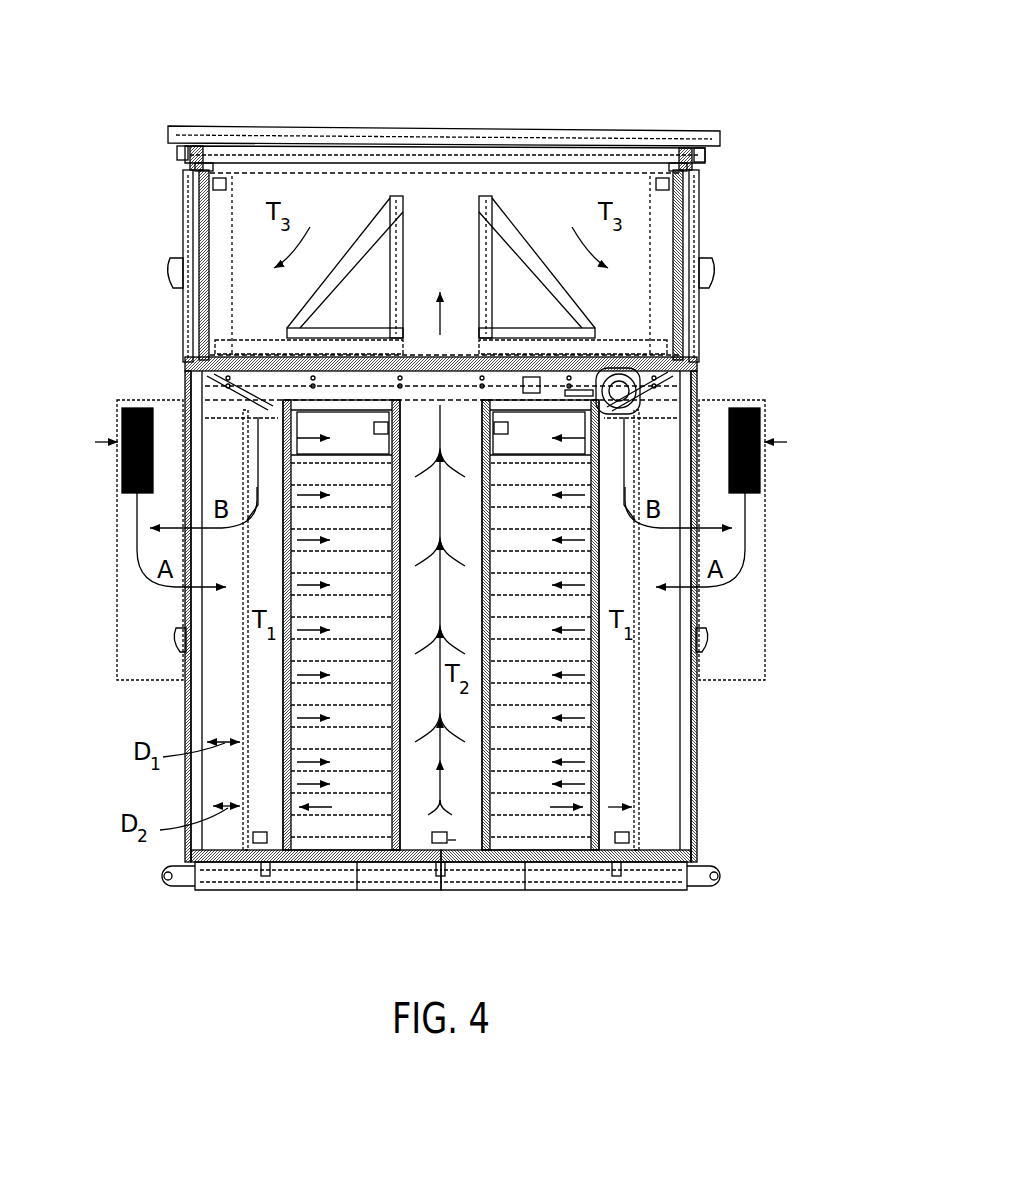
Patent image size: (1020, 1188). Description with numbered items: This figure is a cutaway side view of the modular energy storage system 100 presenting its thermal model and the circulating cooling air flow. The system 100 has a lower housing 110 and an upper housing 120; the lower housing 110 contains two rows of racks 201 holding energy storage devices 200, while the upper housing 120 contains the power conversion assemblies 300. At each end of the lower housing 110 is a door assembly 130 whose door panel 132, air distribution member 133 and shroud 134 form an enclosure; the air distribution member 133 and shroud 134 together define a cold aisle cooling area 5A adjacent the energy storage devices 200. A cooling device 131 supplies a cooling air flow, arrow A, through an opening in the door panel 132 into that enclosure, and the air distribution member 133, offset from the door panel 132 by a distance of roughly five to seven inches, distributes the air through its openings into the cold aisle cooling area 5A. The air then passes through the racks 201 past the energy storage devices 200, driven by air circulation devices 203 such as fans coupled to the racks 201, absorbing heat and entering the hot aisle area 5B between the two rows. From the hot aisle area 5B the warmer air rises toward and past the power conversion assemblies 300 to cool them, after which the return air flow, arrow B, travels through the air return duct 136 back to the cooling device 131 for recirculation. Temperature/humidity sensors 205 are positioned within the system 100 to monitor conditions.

The modular energy storage system 100 is at (641, 80).
The lower housing 110 is at (712, 768).
The upper housing 120 is at (727, 240).
The door assembly 130 is at (178, 712).
The cooling device 131 is at (166, 410).
The door panel 132 is at (195, 780).
The air distribution member 133 is at (207, 383).
The shroud 134 is at (250, 432).
The air return duct 136 is at (232, 392).
The energy storage devices 200 is at (340, 806).
The racks 201 is at (432, 846).
The air circulation devices 203 is at (390, 607).
The temperature/humidity sensors 205 is at (219, 177).
The power conversion assemblies 300 is at (356, 208).
The cold aisle cooling area 5A is at (632, 806).
The hot aisle area 5B is at (452, 840).